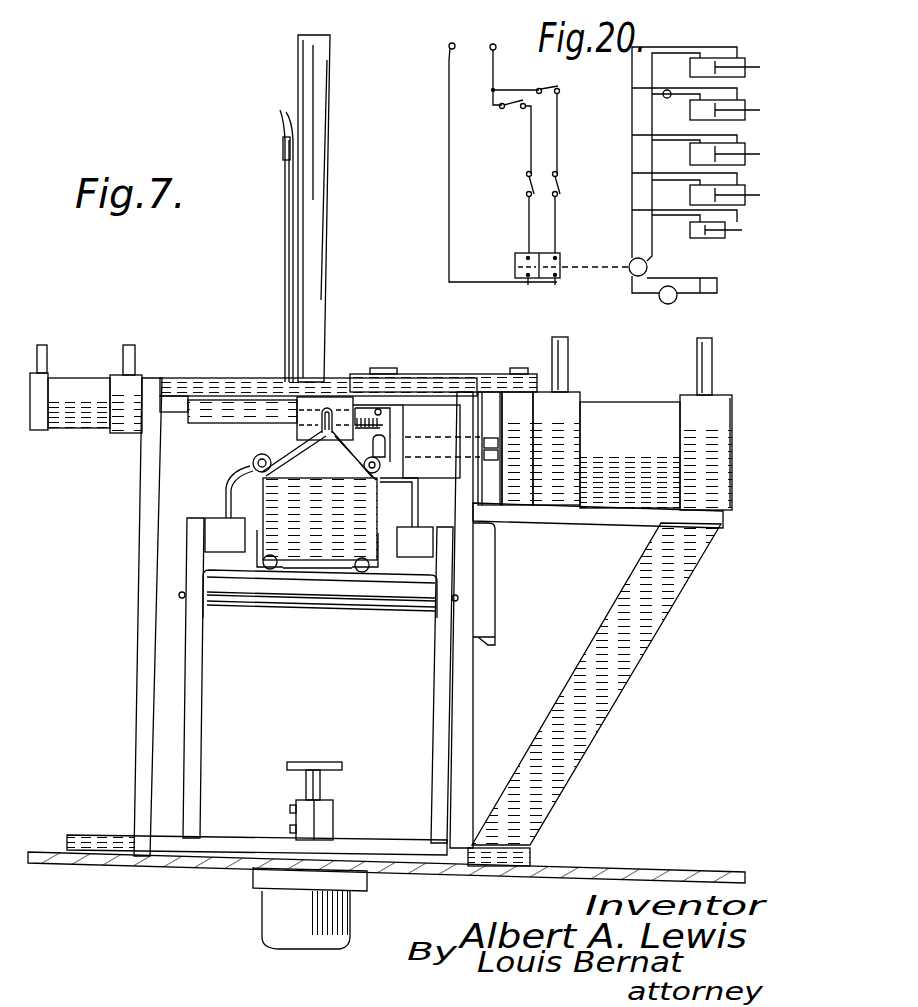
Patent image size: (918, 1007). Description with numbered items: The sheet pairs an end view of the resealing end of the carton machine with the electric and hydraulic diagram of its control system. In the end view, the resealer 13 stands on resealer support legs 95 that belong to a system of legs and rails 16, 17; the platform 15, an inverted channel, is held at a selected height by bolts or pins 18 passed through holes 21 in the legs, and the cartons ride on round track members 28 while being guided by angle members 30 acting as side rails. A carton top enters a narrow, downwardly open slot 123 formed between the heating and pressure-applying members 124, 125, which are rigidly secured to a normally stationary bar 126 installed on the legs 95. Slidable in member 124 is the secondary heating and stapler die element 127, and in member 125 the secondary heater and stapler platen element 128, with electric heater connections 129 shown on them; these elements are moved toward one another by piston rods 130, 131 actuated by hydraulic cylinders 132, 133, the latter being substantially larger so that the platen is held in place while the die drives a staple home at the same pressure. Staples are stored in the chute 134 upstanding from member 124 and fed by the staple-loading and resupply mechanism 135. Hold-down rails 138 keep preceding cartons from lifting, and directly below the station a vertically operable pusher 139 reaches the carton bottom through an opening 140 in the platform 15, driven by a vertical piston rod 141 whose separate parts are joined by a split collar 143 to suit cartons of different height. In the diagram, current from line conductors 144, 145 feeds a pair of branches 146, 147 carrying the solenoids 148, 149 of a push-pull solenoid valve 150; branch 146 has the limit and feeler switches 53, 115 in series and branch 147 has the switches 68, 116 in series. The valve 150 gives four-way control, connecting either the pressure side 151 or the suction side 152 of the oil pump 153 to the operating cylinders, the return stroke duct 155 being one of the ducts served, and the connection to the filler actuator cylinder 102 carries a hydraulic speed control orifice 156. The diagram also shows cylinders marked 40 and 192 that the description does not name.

In FIG. 7, the resealer 13 is at (422, 357).
In FIG. 7, the platform 15 is at (408, 582).
In FIG. 7, the support legs 16 is at (201, 757).
In FIG. 7, the rails 17 is at (218, 518).
In FIG. 7, the bolts or pins 18 is at (285, 612).
In FIG. 7, the holes 21 is at (210, 843).
In FIG. 7, the track members 28 is at (290, 548).
In FIG. 7, the angle members 30 is at (377, 543).
In FIG. 20, the pneumatic cylinder 40 is at (745, 62).
In FIG. 20, the limit and feeler switch 53 is at (547, 88).
In FIG. 20, the limit and feeler switch 68 is at (514, 110).
In FIG. 7, the resealer support legs 95 is at (135, 716).
In FIG. 20, the filler actuator cylinder 102 is at (745, 104).
In FIG. 20, the limit and feeler switch 115 is at (560, 181).
In FIG. 20, the limit and feeler switch 116 is at (524, 182).
In FIG. 7, the slot 123 is at (328, 441).
In FIG. 7, the heating and pressure-applying member 124 is at (297, 433).
In FIG. 7, the heating and pressure-applying member 125 is at (337, 397).
In FIG. 7, the stationary bar 126 is at (227, 378).
In FIG. 7, the stapler die element 127 is at (215, 427).
In FIG. 7, the stapler platen element 128 is at (362, 403).
In FIG. 7, the electric heater connections 129 is at (383, 414).
In FIG. 7, the piston rod 130 is at (170, 400).
In FIG. 7, the piston rod 131 is at (492, 443).
In FIG. 7, the hydraulic cylinder 132 is at (72, 377).
In FIG. 20, the hydraulic cylinder 132 is at (745, 151).
In FIG. 7, the hydraulic cylinder 133 is at (623, 402).
In FIG. 20, the hydraulic cylinder 133 is at (745, 191).
In FIG. 7, the staple chute 134 is at (329, 200).
In FIG. 7, the staple-loading and resupply mechanism 135 is at (283, 125).
In FIG. 7, the hold-down rails 138 is at (232, 474).
In FIG. 7, the pusher 139 is at (340, 762).
In FIG. 7, the opening 140 is at (332, 584).
In FIG. 7, the vertical piston rod 141 is at (327, 786).
In FIG. 7, the split collar 143 is at (331, 823).
In FIG. 20, the line conductor 144 is at (500, 36).
In FIG. 20, the line conductor 145 is at (449, 47).
In FIG. 20, the branch 146 is at (556, 237).
In FIG. 20, the branch 147 is at (529, 230).
In FIG. 20, the solenoid 148 is at (561, 259).
In FIG. 20, the solenoid 149 is at (515, 263).
In FIG. 20, the push-pull solenoid valve 150 is at (630, 276).
In FIG. 20, the pressure side 151 is at (651, 123).
In FIG. 20, the suction side 152 is at (697, 296).
In FIG. 20, the oil pump 153 is at (665, 305).
In FIG. 20, the return stroke duct 155 is at (633, 84).
In FIG. 20, the hydraulic speed control orifice 156 is at (668, 90).
In FIG. 7, the pneumatic cylinder 192 is at (350, 922).
In FIG. 20, the pneumatic cylinder 192 is at (730, 228).